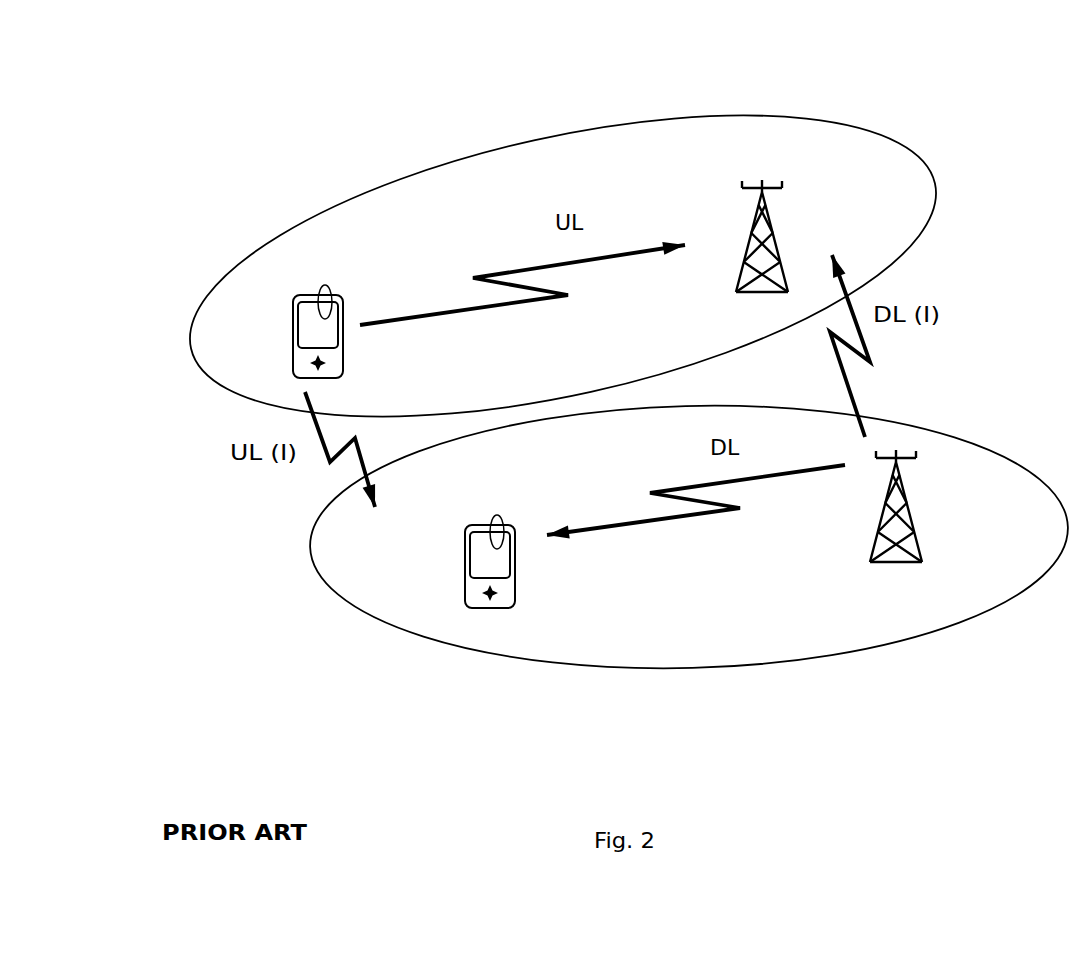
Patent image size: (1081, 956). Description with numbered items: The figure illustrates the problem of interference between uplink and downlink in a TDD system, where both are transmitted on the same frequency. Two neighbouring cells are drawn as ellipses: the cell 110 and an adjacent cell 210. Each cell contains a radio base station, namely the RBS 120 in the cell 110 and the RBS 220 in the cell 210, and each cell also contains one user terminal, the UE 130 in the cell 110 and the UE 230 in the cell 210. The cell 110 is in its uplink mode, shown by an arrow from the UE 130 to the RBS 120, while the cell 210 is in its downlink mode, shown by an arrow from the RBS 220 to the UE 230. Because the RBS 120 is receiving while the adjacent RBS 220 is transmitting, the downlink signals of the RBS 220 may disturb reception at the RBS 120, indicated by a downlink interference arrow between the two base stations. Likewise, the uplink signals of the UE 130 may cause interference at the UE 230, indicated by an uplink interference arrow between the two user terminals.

The cell 110 is at (437, 150).
The radio base station 120 is at (810, 180).
The user terminal 130 is at (278, 317).
The adjacent cell 210 is at (887, 658).
The radio base station 220 is at (930, 505).
The user terminal 230 is at (453, 560).